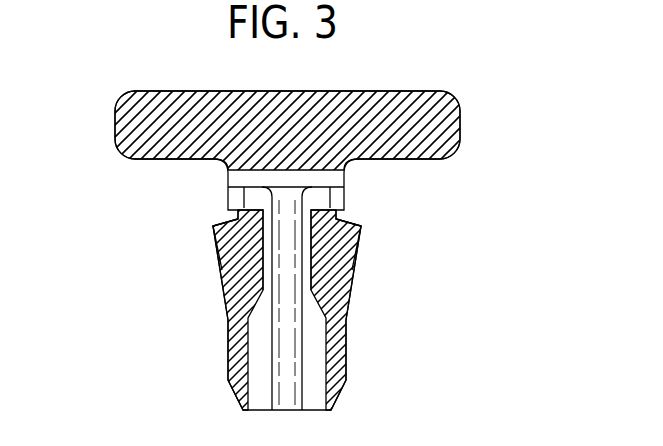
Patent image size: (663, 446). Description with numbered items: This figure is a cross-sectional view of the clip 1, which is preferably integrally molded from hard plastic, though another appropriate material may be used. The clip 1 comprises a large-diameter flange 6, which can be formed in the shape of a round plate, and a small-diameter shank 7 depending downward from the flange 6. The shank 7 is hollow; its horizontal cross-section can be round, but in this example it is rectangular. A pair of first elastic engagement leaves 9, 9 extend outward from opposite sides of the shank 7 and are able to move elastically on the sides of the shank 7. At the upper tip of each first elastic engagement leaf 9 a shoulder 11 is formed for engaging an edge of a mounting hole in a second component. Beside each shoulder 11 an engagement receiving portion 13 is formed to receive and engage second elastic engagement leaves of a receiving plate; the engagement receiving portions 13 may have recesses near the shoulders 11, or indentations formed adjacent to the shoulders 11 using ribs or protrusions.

The clip 1 is at (483, 92).
The flange 6 is at (140, 125).
The shank 7 is at (236, 352).
The first elastic engagement leaf 9 is at (220, 250).
The shoulder 11 is at (240, 214).
The engagement receiving portion 13 is at (228, 205).